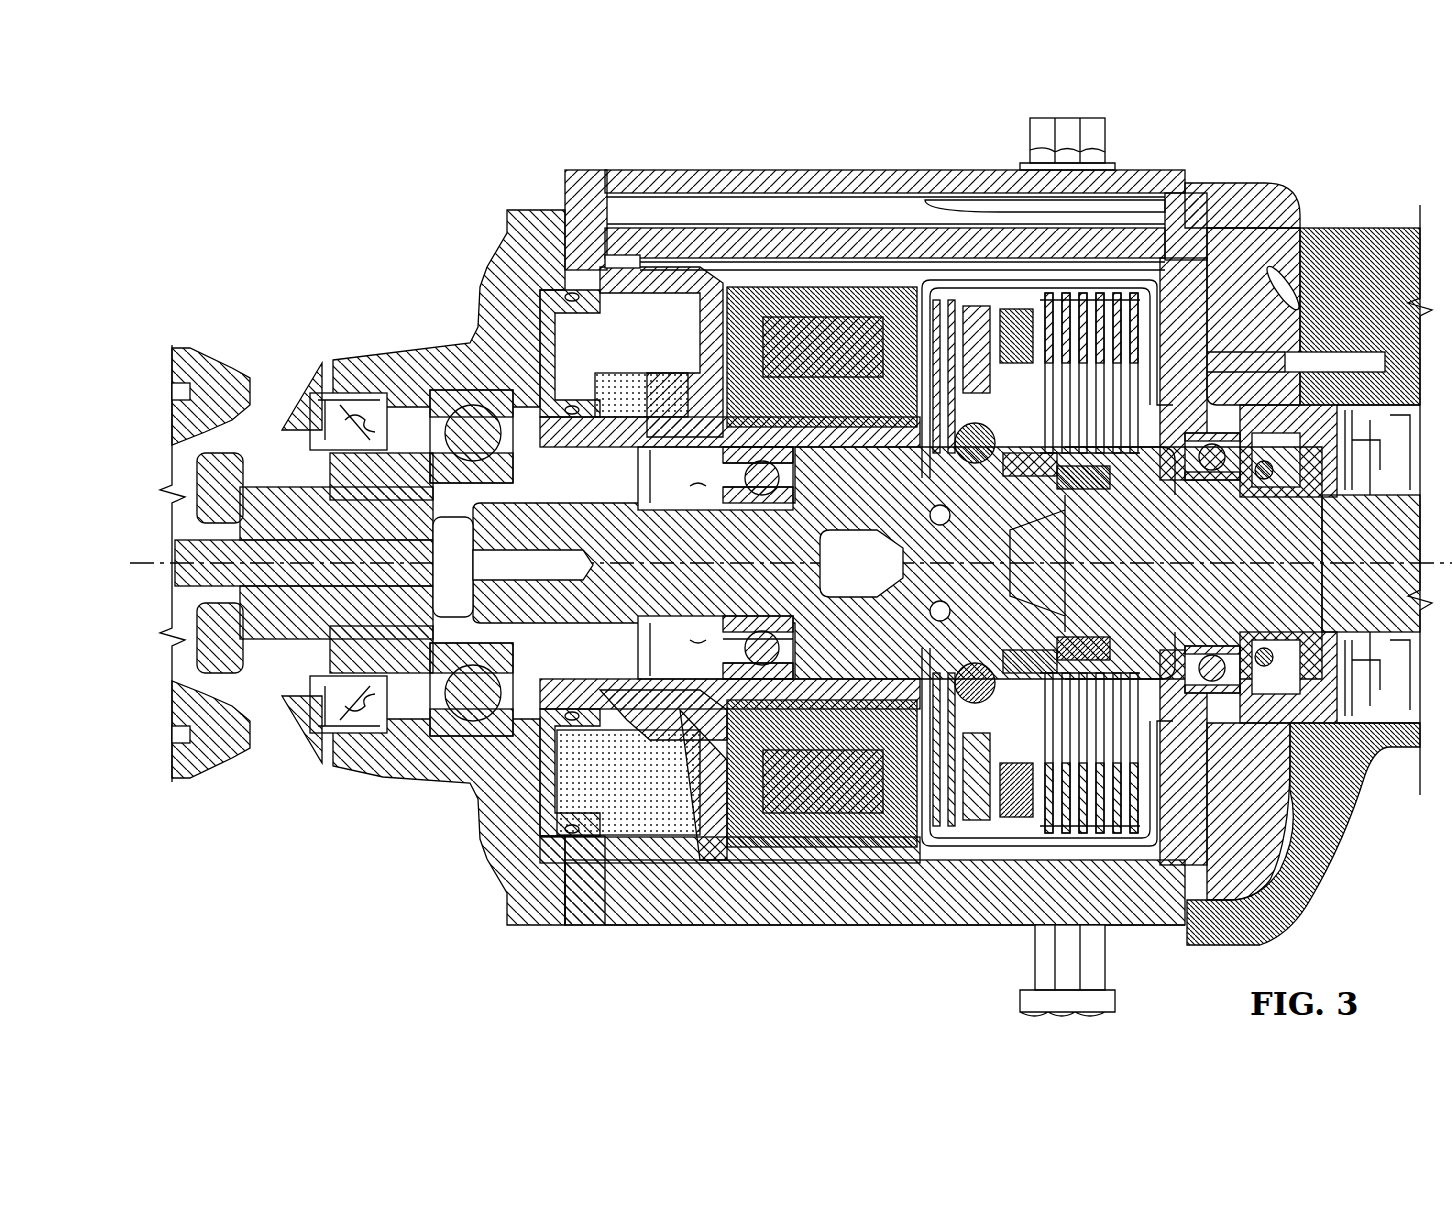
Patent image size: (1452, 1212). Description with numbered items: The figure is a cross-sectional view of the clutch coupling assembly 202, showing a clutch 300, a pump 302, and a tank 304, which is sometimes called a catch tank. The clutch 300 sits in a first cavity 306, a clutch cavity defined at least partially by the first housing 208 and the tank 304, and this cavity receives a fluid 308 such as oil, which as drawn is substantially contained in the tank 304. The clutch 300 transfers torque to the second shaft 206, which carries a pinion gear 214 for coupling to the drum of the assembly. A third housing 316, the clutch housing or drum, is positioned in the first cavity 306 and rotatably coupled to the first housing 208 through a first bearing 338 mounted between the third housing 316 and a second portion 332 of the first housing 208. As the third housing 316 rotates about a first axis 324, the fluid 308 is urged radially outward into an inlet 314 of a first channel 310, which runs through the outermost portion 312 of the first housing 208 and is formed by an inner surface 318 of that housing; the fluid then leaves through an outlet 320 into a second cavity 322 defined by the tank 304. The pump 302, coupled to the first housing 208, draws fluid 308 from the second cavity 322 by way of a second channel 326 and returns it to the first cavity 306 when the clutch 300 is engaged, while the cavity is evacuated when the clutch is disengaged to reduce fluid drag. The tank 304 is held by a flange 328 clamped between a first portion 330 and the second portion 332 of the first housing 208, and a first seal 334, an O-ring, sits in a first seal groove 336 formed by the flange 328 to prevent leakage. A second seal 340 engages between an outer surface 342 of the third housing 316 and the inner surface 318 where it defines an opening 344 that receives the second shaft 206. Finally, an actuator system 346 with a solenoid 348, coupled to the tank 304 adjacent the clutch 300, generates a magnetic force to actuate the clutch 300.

The clutch coupling assembly 202 is at (204, 175).
The second shaft 206 is at (1371, 563).
The first housing 208 is at (775, 925).
The pinion gear 214 is at (877, 563).
The clutch 300 is at (1158, 290).
The pump 302 is at (850, 410).
The tank 304 is at (718, 925).
The first cavity 306 is at (922, 852).
The fluid 308 is at (640, 378).
The first channel 310 is at (786, 205).
The portion of the first housing 312 is at (605, 170).
The inlet 314 is at (1112, 243).
The third housing 316 is at (1000, 855).
The inner surface 318 is at (905, 262).
The outlet 320 is at (626, 255).
The second cavity 322 is at (580, 800).
The first axis 324 is at (172, 563).
The second channel 326 is at (768, 688).
The flange 328 is at (578, 925).
The first portion 330 is at (449, 567).
The second portion 332 is at (875, 892).
The first seal 334 is at (572, 233).
The first seal groove 336 is at (562, 247).
The first bearing 338 is at (1188, 485).
The second seal 340 is at (1268, 710).
The outer surface 342 is at (1252, 455).
The opening 344 is at (1325, 705).
The actuator system 346 is at (912, 270).
The solenoid 348 is at (822, 773).